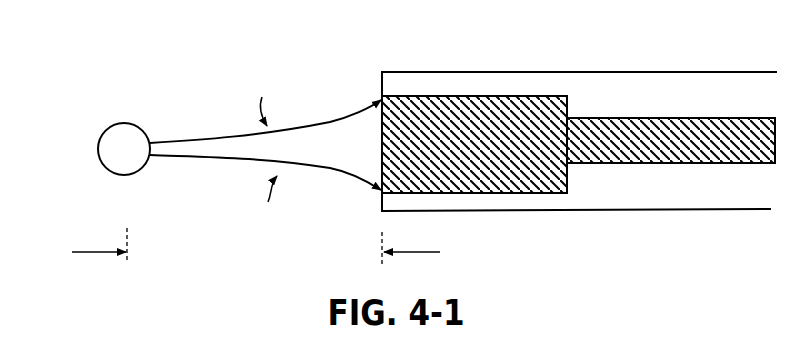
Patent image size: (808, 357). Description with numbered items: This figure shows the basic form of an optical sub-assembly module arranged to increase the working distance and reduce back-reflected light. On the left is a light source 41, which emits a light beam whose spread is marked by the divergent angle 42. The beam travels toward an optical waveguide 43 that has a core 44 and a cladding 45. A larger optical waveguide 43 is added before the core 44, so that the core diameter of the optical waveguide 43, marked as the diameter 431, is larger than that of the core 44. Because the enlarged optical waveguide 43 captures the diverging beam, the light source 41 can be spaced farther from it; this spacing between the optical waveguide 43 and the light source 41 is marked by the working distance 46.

The light source 41 is at (92, 149).
The divergent angle 42 is at (265, 149).
The optical waveguide 43 is at (474, 144).
The diameter 431 is at (515, 230).
The core 44 is at (671, 140).
The cladding 45 is at (579, 141).
The working distance 46 is at (256, 249).